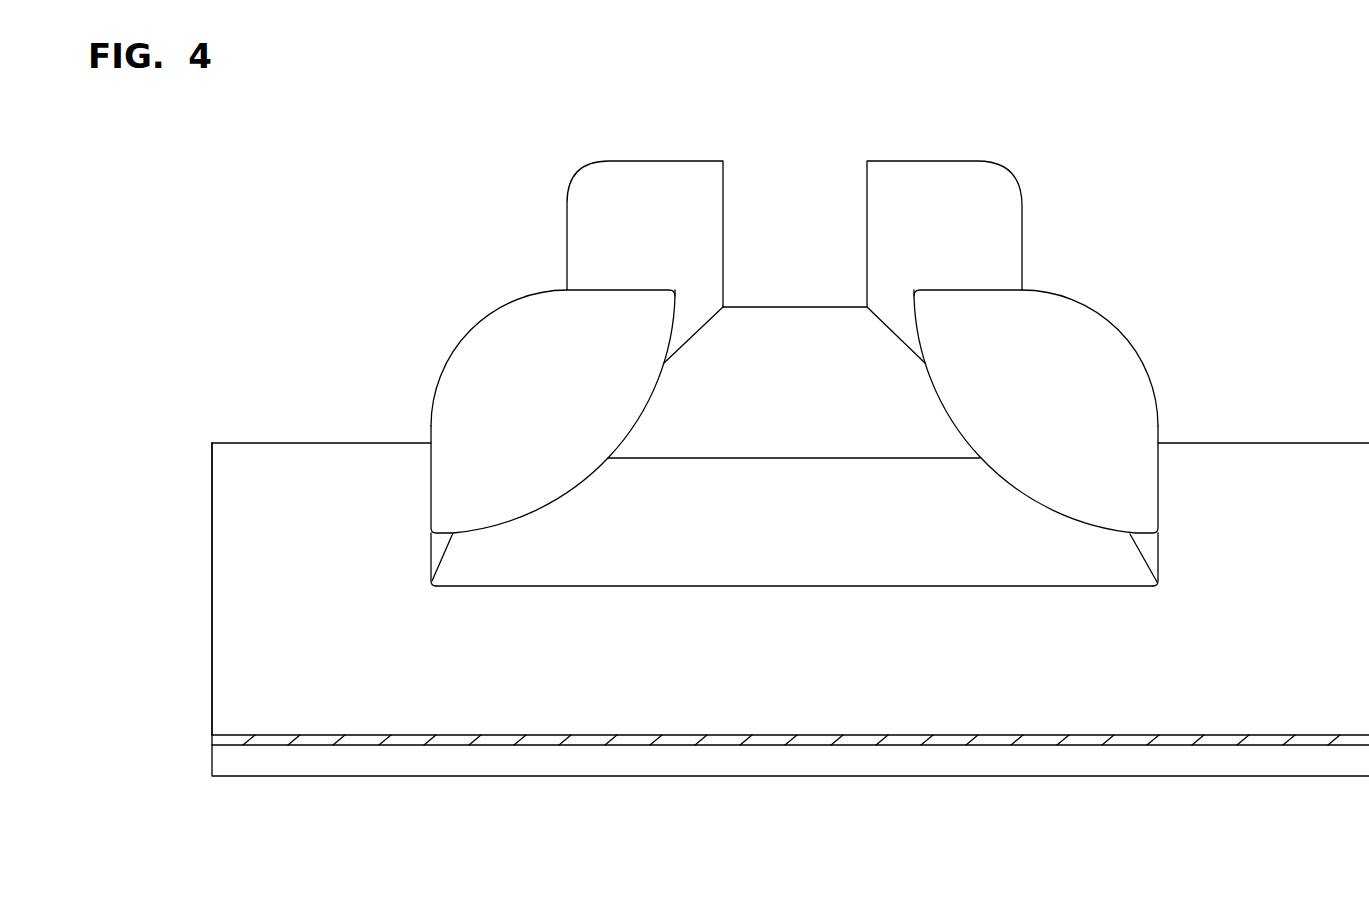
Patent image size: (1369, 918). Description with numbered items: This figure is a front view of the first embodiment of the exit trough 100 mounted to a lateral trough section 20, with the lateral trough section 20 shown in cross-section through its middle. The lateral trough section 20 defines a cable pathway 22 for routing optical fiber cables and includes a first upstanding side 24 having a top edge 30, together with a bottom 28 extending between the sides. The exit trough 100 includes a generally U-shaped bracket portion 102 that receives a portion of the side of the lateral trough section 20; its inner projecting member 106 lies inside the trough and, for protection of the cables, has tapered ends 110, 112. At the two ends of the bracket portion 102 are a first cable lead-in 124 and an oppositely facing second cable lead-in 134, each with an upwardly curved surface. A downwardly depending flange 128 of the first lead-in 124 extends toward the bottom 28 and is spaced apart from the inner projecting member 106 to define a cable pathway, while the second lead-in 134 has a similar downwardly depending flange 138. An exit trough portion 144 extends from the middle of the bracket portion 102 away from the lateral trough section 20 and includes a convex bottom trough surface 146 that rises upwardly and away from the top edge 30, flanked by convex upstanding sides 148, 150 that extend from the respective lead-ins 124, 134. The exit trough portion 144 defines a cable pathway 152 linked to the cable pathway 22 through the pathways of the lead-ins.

The lateral trough section 20 is at (767, 792).
The cable pathway 22 is at (1192, 704).
The first upstanding side 24 is at (320, 667).
The bottom 28 is at (727, 736).
The top edge 30 is at (322, 443).
The exit trough 100 is at (861, 198).
The bracket portion 102 is at (1027, 587).
The inner projecting member 106 is at (830, 549).
The tapered end 110 is at (437, 548).
The tapered end 112 is at (1147, 555).
The first cable lead-in 124 is at (530, 380).
The downwardly depending flange 128 is at (547, 462).
The second cable lead-in 134 is at (1080, 398).
The downwardly depending flange 138 is at (1087, 464).
The exit trough portion 144 is at (1022, 290).
The bottom trough surface 146 is at (817, 397).
The upstanding side 148 is at (677, 232).
The upstanding side 150 is at (974, 232).
The cable pathway 152 is at (819, 250).